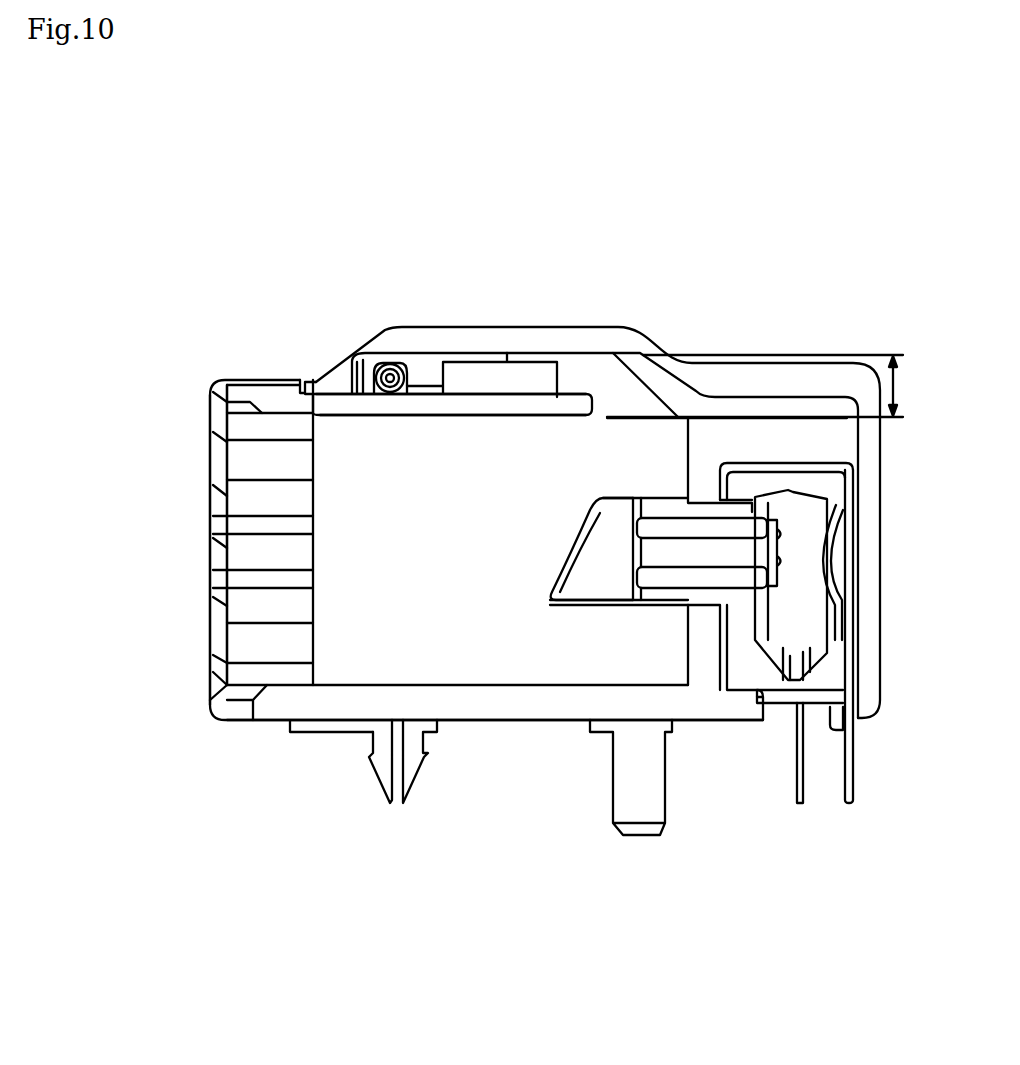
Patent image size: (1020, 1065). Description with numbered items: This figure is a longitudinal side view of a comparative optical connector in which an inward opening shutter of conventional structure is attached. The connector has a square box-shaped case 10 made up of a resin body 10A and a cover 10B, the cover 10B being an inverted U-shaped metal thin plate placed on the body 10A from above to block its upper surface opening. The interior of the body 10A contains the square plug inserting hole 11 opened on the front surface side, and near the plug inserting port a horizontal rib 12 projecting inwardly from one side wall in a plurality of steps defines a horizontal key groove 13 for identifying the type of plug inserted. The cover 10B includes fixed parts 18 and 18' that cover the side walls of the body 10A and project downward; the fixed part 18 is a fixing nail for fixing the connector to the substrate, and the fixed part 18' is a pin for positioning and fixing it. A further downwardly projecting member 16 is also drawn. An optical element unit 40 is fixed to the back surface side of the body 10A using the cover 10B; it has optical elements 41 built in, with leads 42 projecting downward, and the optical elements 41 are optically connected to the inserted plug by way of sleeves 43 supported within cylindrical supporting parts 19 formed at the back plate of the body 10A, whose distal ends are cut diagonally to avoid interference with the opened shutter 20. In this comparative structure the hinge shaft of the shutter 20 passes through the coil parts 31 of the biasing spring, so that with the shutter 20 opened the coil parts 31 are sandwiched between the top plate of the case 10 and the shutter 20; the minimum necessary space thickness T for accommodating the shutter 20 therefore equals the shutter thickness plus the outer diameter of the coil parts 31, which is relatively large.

The case 10 is at (290, 363).
The body 10A is at (508, 728).
The cover 10B is at (513, 329).
The plug inserting hole 11 is at (381, 648).
The horizontal rib 12 is at (214, 501).
The horizontal key groove 13 is at (307, 525).
The mounting pin 16 is at (640, 841).
The fixed part 18 is at (389, 794).
The fixed part 18' is at (869, 663).
The cylindrical supporting part 19 is at (585, 607).
The shutter 20 is at (468, 417).
The coil part 31 is at (391, 371).
The optical element unit 40 is at (781, 721).
The optical element 41 is at (818, 545).
The lead 42 is at (805, 796).
The sleeve 43 is at (677, 582).
The space thickness T is at (760, 386).